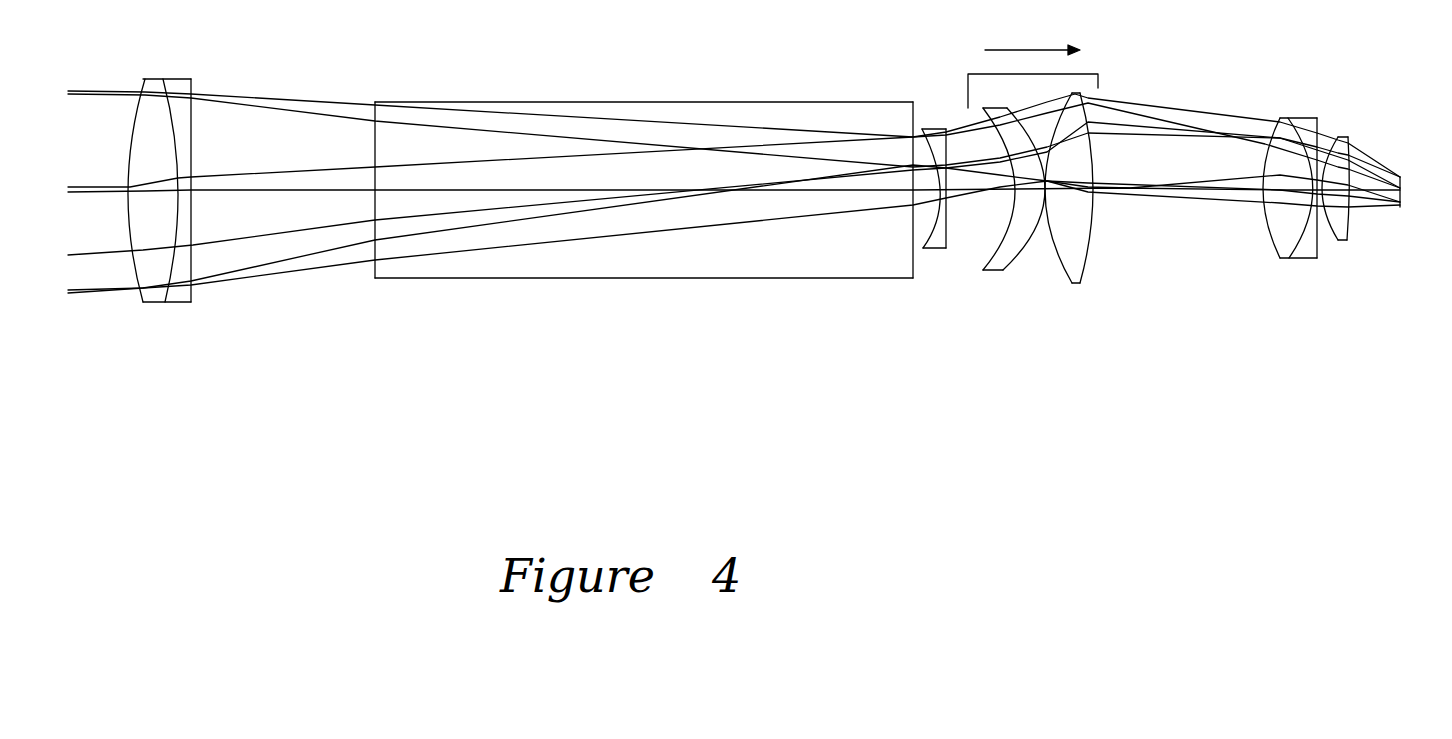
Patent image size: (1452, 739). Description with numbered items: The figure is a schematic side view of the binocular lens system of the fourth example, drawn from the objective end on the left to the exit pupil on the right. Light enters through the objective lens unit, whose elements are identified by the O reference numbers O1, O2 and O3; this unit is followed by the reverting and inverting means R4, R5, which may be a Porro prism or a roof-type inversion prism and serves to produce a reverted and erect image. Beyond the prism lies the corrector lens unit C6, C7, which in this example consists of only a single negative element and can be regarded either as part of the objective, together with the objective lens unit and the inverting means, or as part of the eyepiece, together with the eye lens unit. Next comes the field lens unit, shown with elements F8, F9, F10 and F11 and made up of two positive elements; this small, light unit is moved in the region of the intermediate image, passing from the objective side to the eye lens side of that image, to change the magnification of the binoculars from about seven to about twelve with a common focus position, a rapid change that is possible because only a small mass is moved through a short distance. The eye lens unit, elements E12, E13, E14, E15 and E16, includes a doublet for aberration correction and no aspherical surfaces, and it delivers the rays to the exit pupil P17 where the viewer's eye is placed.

The objective lens element O1 is at (143, 300).
The objective lens element O2 is at (165, 302).
The objective lens element O3 is at (192, 302).
The reverting and inverting means R4 is at (375, 278).
The reverting and inverting means R5 is at (912, 268).
The corrector lens element C6 is at (923, 248).
The corrector lens element C7 is at (946, 248).
The field lens element F8 is at (983, 263).
The field lens element F9 is at (1013, 262).
The field lens element F10 is at (1072, 283).
The field lens element F11 is at (1082, 283).
The eye lens element E12 is at (1267, 233).
The eye lens element E13 is at (1290, 243).
The eye lens element E14 is at (1318, 260).
The eye lens element E15 is at (1333, 240).
The eye lens element E16 is at (1347, 222).
The exit pupil P17 is at (1402, 177).